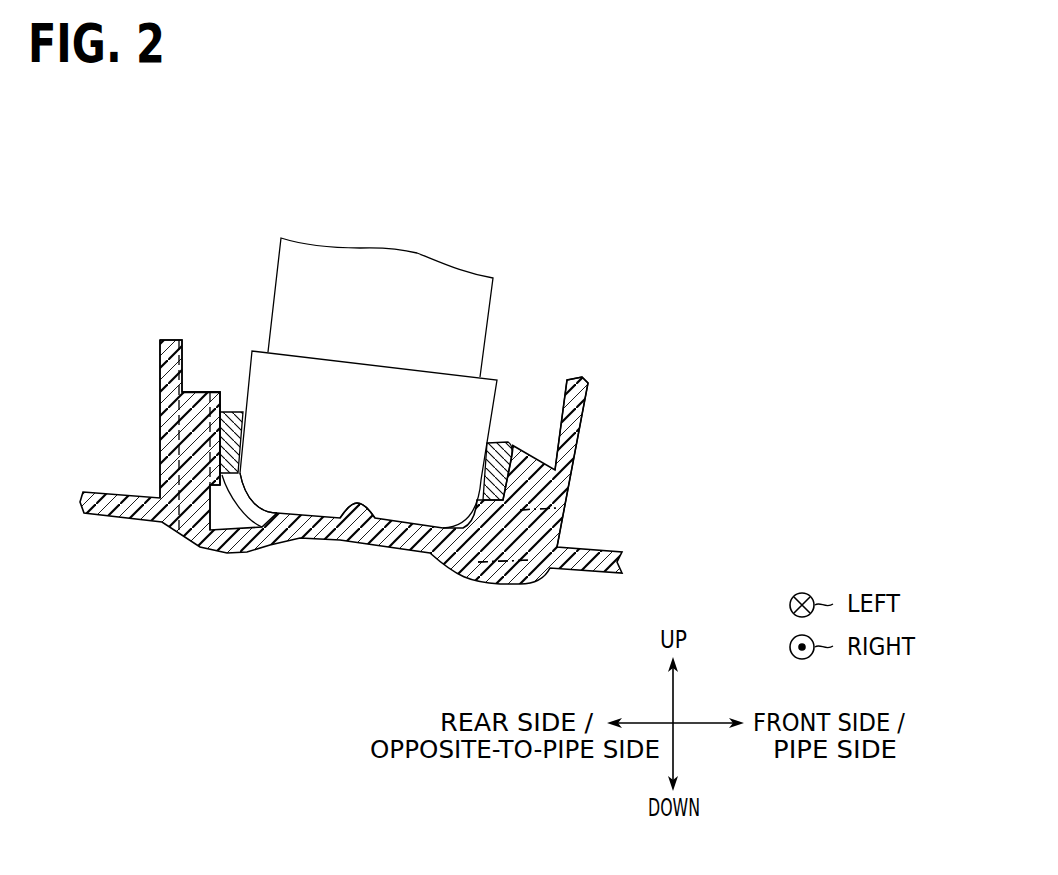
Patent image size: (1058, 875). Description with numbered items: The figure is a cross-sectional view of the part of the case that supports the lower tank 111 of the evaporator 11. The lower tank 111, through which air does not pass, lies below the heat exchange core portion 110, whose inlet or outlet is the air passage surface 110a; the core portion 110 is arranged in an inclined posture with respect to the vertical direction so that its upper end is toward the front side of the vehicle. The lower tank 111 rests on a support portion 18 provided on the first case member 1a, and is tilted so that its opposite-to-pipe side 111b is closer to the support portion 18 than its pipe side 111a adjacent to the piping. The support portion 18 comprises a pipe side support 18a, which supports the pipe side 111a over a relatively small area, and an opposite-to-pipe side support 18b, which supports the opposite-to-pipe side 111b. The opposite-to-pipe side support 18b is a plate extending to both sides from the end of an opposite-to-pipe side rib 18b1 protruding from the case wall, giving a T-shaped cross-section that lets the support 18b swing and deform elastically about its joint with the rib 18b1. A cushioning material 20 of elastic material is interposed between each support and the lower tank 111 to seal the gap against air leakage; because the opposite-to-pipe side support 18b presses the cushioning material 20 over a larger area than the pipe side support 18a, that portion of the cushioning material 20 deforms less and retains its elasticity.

The first case member 1a is at (194, 546).
The evaporator 11 is at (487, 348).
The support portion 18 is at (167, 451).
The pipe side support 18a is at (558, 512).
The opposite-to-pipe side support 18b is at (216, 392).
The opposite-to-pipe side rib 18b1 is at (198, 400).
The cushioning material 20 is at (233, 412).
The heat exchange core portion 110 is at (480, 297).
The air passage surface 110a is at (278, 260).
The lower tank 111 is at (384, 506).
The pipe side 111a is at (495, 584).
The opposite-to-pipe side 111b is at (262, 542).